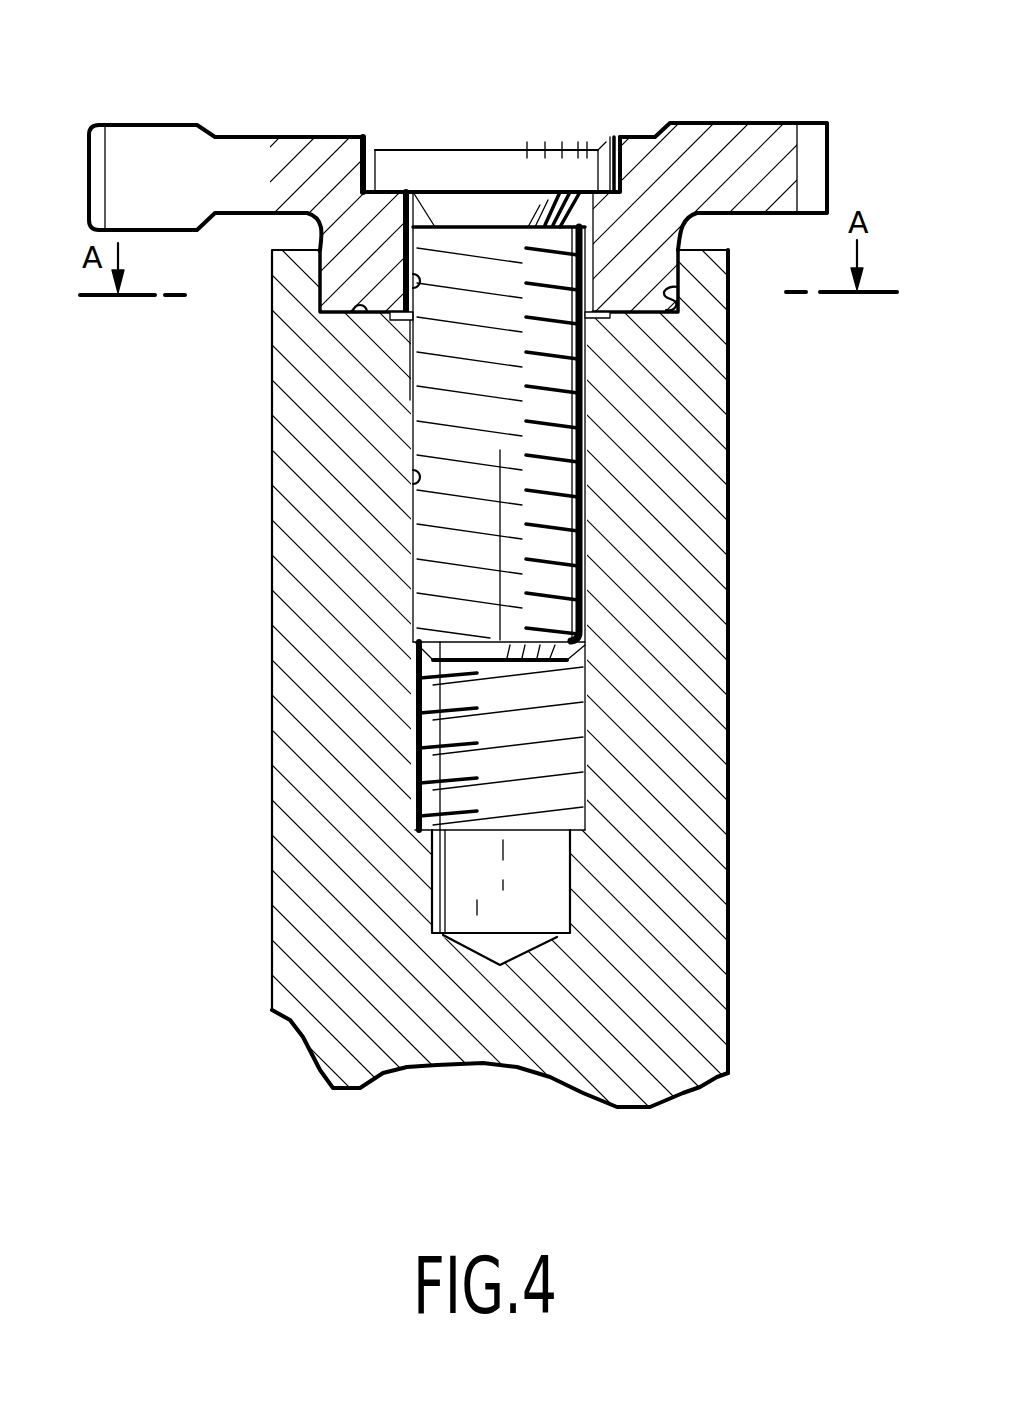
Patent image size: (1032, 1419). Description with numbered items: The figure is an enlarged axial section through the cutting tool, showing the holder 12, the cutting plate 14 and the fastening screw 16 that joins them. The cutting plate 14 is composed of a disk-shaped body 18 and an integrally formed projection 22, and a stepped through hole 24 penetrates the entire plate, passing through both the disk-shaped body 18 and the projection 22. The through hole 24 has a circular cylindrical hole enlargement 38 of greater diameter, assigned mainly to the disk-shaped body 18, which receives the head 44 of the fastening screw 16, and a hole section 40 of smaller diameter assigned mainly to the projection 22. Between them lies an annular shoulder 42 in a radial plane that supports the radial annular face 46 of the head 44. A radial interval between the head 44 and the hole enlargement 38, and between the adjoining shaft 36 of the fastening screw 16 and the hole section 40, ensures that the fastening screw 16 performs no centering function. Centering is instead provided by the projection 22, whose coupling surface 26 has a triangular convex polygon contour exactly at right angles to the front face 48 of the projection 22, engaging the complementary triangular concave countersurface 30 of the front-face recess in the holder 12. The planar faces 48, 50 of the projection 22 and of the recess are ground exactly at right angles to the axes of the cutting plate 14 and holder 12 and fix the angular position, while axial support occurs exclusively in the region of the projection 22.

The holder 12 is at (710, 522).
The cutting plate 14 is at (712, 143).
The fastening screw 16 is at (550, 240).
The disk-shaped body 18 is at (290, 147).
The projection 22 is at (333, 273).
The through hole 24 is at (410, 230).
The coupling surface 26 is at (680, 273).
The countersurface 30 is at (665, 296).
The bolt shank 36 is at (413, 493).
The hole enlargement 38 is at (367, 140).
The hole section 40 is at (387, 290).
The annular shoulder 42 is at (368, 188).
The head 44 is at (508, 152).
The radial annular face 46 is at (598, 185).
The front face 48 is at (636, 312).
The planar face 50 is at (360, 310).